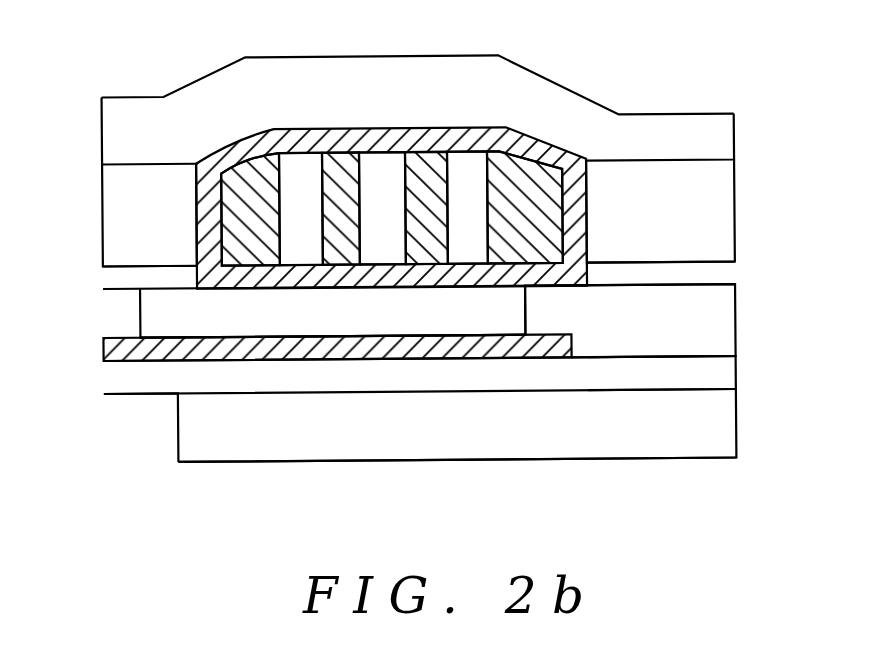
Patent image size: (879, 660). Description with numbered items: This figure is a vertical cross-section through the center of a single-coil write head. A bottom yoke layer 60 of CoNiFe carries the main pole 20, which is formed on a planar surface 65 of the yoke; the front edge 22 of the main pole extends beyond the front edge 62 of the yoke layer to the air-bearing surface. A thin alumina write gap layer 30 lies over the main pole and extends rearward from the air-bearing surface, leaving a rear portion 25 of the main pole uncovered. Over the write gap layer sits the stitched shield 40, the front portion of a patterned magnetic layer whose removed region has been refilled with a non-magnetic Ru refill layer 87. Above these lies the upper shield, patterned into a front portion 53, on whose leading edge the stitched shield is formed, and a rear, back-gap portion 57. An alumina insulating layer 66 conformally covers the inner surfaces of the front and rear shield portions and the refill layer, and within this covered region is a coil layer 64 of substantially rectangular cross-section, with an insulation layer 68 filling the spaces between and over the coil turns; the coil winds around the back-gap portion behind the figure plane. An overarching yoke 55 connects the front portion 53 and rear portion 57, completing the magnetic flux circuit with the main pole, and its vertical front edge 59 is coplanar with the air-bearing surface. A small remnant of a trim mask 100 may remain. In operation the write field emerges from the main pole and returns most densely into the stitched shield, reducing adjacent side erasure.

The main pole 20 is at (210, 382).
The front edge of the main pole layer 22 is at (103, 383).
The rear portion of the main pole layer 25 is at (695, 353).
The write gap layer 30 is at (118, 356).
The stitched shield 40 is at (127, 310).
The front portion of the upper shield layer (WS1) 53 is at (135, 223).
The overarching yoke (WS2) 55 is at (127, 135).
The rear portion of the upper shield layer (back-gap region) 57 is at (717, 227).
The vertical front edge of the overarching yoke 59 is at (103, 108).
The bottom yoke layer 60 is at (272, 444).
The front edge of the yoke layer 62 is at (177, 427).
The coil layer 64 is at (303, 173).
The planar surface of the bottom yoke layer 65 is at (693, 388).
The alumina insulating layer 66 is at (525, 140).
The insulation layer 68 is at (247, 188).
The refill layer 87 is at (363, 318).
The trim mask 100 is at (117, 280).